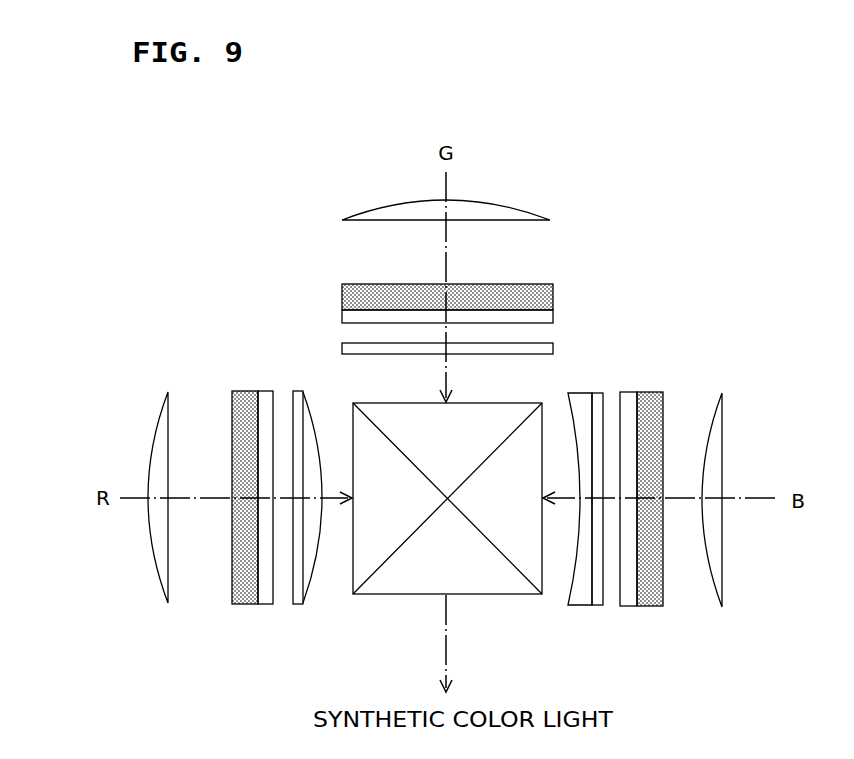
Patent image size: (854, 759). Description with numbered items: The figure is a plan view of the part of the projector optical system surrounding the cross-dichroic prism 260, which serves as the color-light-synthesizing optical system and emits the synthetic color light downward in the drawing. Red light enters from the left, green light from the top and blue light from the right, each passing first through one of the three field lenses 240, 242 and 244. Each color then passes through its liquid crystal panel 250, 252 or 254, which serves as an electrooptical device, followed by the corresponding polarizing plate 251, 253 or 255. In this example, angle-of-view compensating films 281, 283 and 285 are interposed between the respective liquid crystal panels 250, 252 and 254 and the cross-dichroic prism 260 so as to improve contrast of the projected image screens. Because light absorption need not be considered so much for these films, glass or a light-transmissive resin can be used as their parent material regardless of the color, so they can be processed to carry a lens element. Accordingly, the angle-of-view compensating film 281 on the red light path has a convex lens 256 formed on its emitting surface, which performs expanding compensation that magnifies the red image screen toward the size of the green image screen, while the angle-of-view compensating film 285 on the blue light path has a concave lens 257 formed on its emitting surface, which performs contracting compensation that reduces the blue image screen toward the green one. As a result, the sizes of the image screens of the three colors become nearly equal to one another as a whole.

The field lens 240 is at (158, 420).
The field lens 242 is at (527, 212).
The field lens 244 is at (722, 420).
The liquid crystal panel 250 is at (232, 405).
The polarizing plate 251 is at (265, 605).
The liquid crystal panel 252 is at (537, 284).
The polarizing plate 253 is at (553, 313).
The liquid crystal panel 254 is at (658, 390).
The polarizing plate 255 is at (625, 605).
The convex lens for compensating chromatic aberration of magnification 256 is at (310, 415).
The concave lens for compensating chromatic aberration of magnification 257 is at (570, 392).
The cross-dichroic prism 260 is at (432, 597).
The angle-of-view compensating film 281 is at (299, 391).
The angle-of-view compensating film 283 is at (553, 343).
The angle-of-view compensating film 285 is at (593, 390).